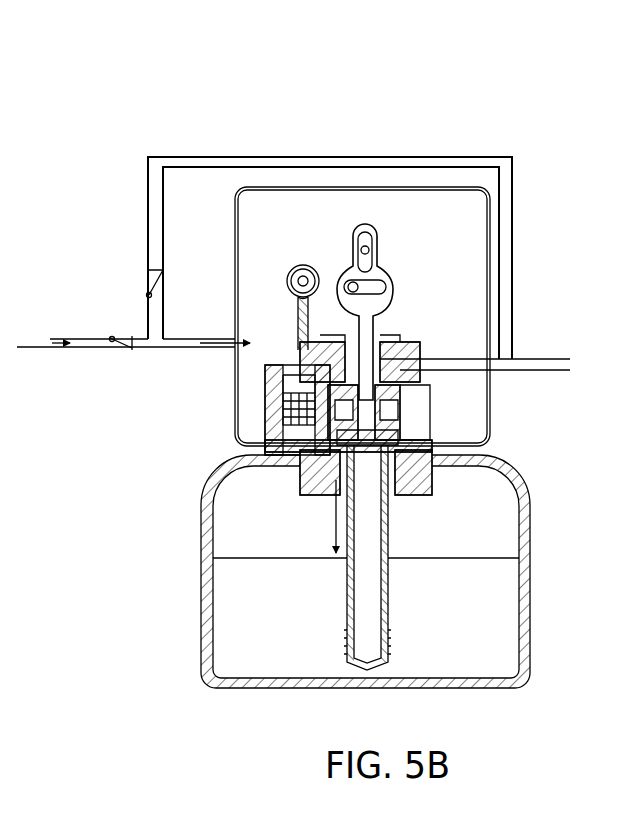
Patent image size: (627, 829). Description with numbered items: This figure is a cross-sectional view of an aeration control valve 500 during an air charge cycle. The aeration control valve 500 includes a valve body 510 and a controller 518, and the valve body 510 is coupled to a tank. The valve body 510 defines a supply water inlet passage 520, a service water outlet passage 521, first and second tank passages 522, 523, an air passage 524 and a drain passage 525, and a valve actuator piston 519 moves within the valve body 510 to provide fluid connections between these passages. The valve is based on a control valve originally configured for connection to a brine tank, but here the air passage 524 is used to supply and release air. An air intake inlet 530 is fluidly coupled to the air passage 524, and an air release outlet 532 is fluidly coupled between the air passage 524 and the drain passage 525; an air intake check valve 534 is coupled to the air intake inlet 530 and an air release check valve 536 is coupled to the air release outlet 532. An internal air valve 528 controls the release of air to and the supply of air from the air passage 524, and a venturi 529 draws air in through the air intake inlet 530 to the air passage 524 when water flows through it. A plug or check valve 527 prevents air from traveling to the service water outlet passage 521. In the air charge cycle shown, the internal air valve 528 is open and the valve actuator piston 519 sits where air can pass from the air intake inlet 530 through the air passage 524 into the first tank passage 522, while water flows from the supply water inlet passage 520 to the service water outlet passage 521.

The aeration control valve 500 is at (245, 128).
The valve body 510 is at (388, 332).
The controller 518 is at (235, 225).
The valve actuator piston 519 is at (398, 384).
The supply water inlet passage 520 is at (400, 398).
The service water outlet passage 521 is at (402, 413).
The first tank passage 522 is at (330, 492).
The second tank passage 523 is at (375, 530).
The air passage 524 is at (272, 338).
The drain passage 525 is at (425, 359).
The plug or check valve 527 is at (302, 455).
The internal air valve 528 is at (272, 372).
The venturi 529 is at (270, 388).
The air intake inlet 530 is at (90, 350).
The air release outlet 532 is at (155, 243).
The air intake check valve 534 is at (118, 336).
The air release check valve 536 is at (152, 282).